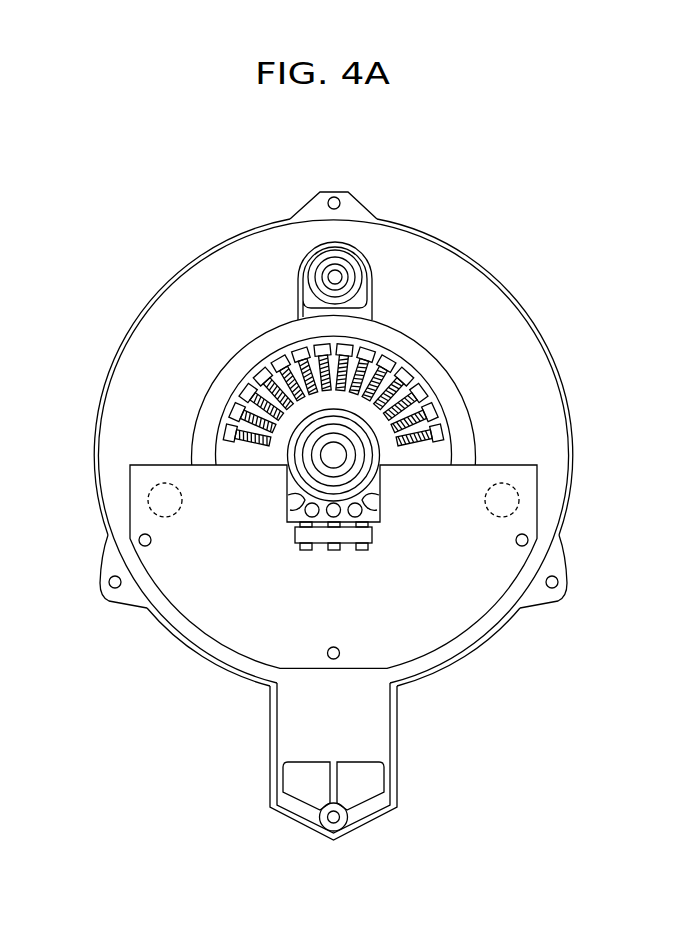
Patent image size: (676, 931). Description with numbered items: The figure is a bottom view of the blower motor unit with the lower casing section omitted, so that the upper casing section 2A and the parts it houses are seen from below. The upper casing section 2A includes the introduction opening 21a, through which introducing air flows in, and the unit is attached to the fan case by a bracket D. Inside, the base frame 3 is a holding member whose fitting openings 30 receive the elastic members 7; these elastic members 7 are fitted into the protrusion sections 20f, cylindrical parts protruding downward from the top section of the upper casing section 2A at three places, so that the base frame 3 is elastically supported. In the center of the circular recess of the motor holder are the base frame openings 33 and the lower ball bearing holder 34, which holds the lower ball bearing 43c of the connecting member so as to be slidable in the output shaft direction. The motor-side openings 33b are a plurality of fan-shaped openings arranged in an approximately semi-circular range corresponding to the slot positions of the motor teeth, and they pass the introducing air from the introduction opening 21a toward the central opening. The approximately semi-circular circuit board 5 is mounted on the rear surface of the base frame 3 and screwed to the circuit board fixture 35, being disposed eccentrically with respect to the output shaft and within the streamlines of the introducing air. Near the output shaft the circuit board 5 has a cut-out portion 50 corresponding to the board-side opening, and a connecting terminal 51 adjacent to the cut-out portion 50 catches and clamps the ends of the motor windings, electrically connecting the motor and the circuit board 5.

The upper casing section 2A is at (267, 214).
The elastic members 7 is at (321, 250).
The bracket D is at (334, 196).
The protrusion sections 20f is at (340, 268).
The fitting openings 30 is at (343, 282).
The motor-side openings 33b is at (340, 347).
The base frame openings 33 is at (350, 318).
The lower ball bearing 43c is at (307, 453).
The base frame 3 is at (470, 421).
The lower ball bearing holder 34 is at (378, 457).
The circuit board fixture 35 is at (139, 541).
The cut-out portion 50 is at (302, 512).
The connecting terminal 51 is at (323, 540).
The circuit board 5 is at (490, 598).
The introduction opening 21a is at (377, 792).